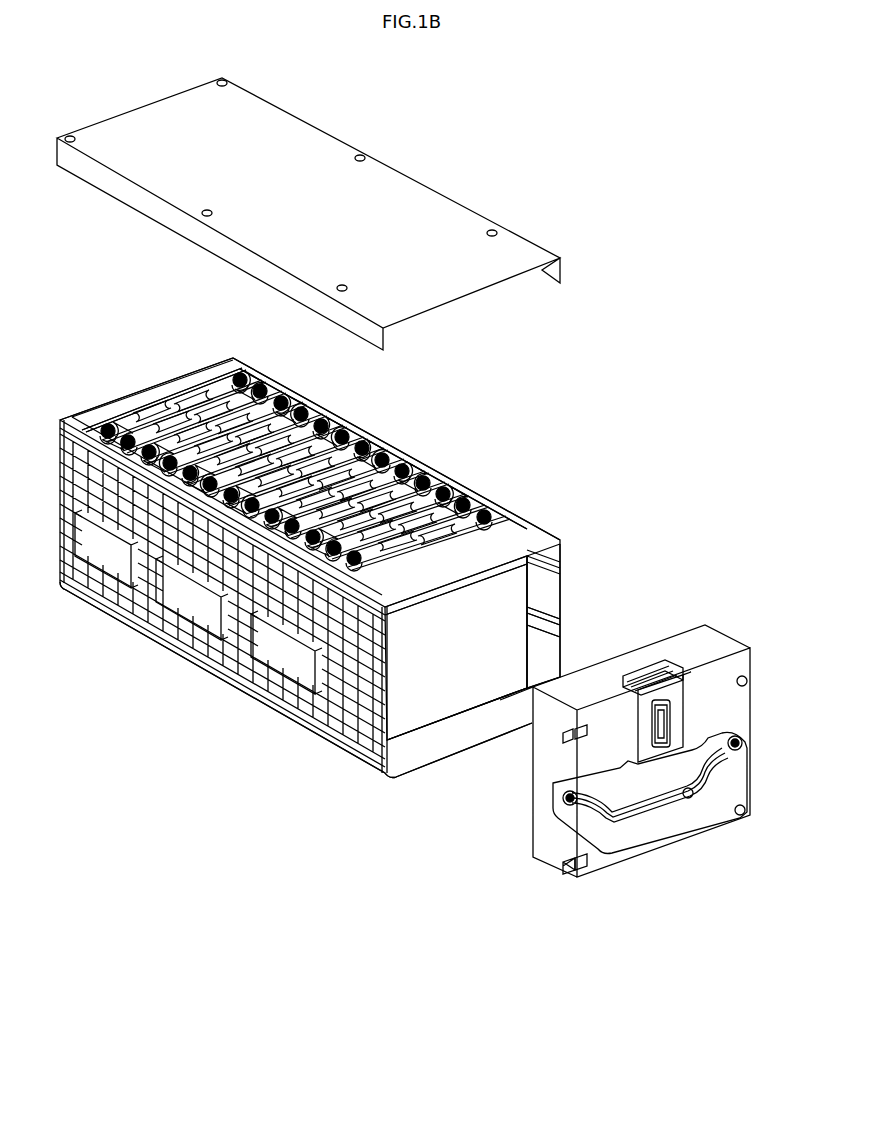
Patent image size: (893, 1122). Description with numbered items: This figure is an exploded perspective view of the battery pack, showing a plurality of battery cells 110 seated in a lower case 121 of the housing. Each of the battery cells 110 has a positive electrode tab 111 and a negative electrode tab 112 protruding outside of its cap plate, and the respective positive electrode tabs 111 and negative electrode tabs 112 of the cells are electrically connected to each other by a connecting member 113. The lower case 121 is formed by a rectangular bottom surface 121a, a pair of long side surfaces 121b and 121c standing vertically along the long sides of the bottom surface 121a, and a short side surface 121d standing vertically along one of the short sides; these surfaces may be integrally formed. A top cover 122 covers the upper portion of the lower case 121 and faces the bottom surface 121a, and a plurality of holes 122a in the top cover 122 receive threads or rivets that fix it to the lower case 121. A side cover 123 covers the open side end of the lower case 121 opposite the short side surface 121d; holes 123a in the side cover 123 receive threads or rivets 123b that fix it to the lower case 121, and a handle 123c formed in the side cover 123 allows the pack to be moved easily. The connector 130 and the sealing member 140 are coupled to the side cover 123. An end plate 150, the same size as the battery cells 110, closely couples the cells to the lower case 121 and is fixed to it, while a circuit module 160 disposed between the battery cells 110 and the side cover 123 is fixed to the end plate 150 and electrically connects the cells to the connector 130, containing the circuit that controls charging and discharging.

The battery cells 110 is at (207, 382).
The positive electrode tab 111 is at (107, 412).
The negative electrode tab 112 is at (243, 372).
The connecting member 113 is at (273, 383).
The lower case 121 is at (181, 671).
The bottom surface 121a is at (407, 757).
The long side surface 121b is at (313, 720).
The long side surface 121c is at (468, 486).
The short side surface 121d is at (147, 383).
The top cover 122 is at (397, 178).
The holes 122a is at (493, 227).
The side cover 123 is at (740, 707).
The holes 123a is at (571, 874).
The threads or rivets 123b is at (583, 872).
The handle 123c is at (667, 807).
The connector 130 is at (650, 658).
The sealing member 140 is at (687, 680).
The end plate 150 is at (518, 533).
The circuit module 160 is at (562, 567).